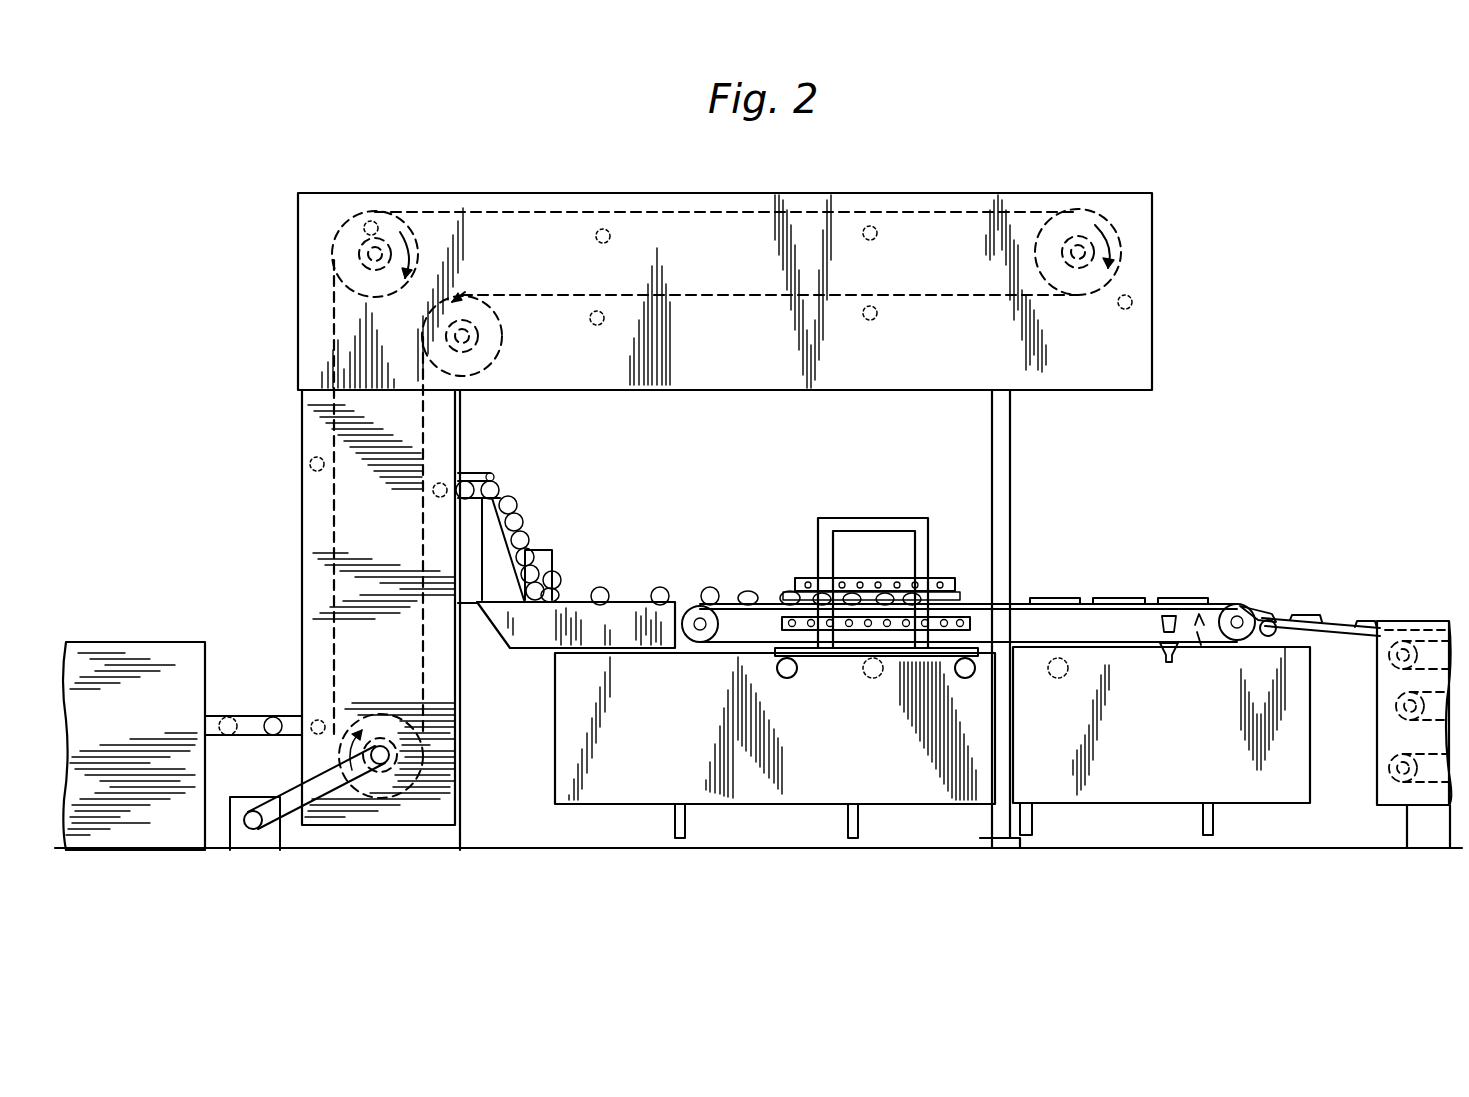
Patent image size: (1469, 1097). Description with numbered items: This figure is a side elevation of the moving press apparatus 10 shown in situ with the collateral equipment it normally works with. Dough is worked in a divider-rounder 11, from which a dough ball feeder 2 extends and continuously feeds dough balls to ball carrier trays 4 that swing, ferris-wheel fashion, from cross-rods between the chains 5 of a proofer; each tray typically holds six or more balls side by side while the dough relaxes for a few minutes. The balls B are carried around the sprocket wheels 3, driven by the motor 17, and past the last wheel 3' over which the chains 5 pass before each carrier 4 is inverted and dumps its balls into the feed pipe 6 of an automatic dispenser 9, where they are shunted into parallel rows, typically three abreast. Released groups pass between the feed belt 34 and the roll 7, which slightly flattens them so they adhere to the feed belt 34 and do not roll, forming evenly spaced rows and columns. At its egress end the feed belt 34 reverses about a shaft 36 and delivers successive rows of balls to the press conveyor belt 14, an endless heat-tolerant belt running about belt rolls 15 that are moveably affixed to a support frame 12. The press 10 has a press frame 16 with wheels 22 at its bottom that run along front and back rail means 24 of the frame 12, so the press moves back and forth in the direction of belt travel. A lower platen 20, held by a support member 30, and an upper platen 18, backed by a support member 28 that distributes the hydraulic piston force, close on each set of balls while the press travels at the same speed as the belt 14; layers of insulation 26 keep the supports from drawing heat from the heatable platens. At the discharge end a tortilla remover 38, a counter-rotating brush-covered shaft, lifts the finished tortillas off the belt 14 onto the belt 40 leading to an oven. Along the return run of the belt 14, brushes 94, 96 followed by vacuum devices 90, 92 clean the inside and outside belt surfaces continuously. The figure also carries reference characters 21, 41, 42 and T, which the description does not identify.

The dough ball feeder 2 is at (250, 716).
The sprocket wheels 3 is at (762, 503).
The last wheel 3' is at (486, 334).
The ball carrier trays 4 is at (385, 235).
The chains 5 is at (333, 325).
The feed pipe 6 is at (465, 492).
The roll 7 is at (560, 576).
The automatic dispenser 9 is at (545, 550).
The moving press apparatus 10 is at (878, 505).
The divider-rounder 11 is at (118, 642).
The support frame 12 is at (1003, 735).
The press conveyor belt 14 is at (718, 600).
The belt rolls 15 is at (700, 642).
The press frame 16 is at (900, 520).
The motor 17 is at (245, 797).
The upper platen 18 is at (800, 583).
The lower platen 20 is at (770, 600).
The perforated plate 21 is at (935, 578).
The wheels 22 is at (790, 678).
The front and back rail means 24 is at (823, 656).
The layer of insulation 26 is at (793, 592).
The support member 28 is at (848, 578).
The support member 30 is at (775, 656).
The feed belt 34 is at (540, 648).
The shaft 36 is at (685, 598).
The tortilla remover 38 is at (1262, 611).
The belt 40 is at (1285, 618).
The receiving conveyor 41 is at (1430, 620).
The idler roller 42 is at (1268, 636).
The vacuum device 90 is at (1160, 628).
The vacuum device 92 is at (1165, 655).
The brush 94 is at (1204, 626).
The brush 96 is at (1196, 648).
The balls B is at (598, 235).
The trays T is at (1118, 598).